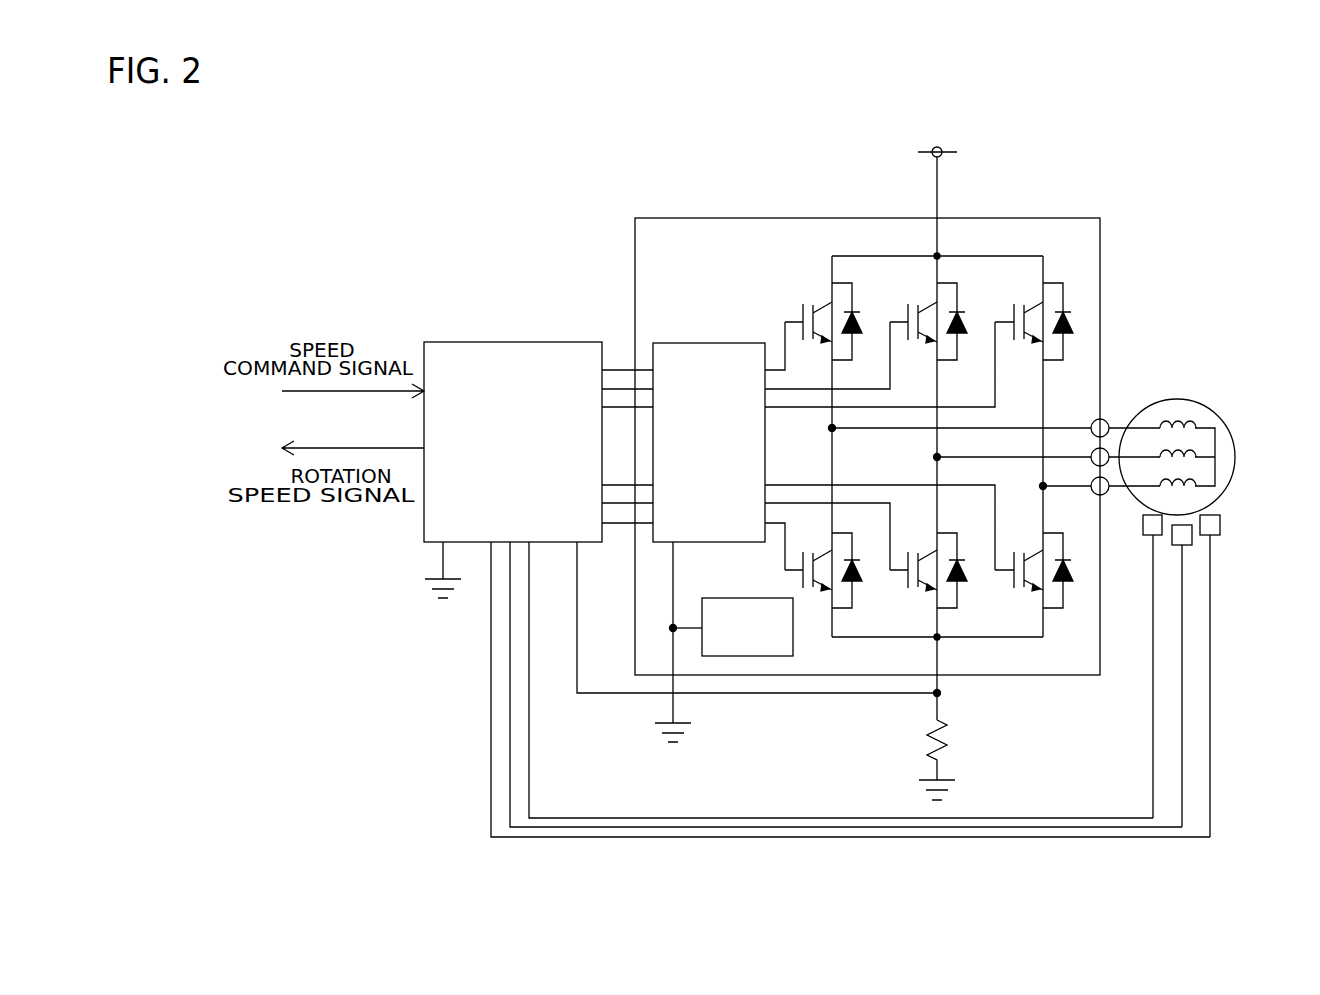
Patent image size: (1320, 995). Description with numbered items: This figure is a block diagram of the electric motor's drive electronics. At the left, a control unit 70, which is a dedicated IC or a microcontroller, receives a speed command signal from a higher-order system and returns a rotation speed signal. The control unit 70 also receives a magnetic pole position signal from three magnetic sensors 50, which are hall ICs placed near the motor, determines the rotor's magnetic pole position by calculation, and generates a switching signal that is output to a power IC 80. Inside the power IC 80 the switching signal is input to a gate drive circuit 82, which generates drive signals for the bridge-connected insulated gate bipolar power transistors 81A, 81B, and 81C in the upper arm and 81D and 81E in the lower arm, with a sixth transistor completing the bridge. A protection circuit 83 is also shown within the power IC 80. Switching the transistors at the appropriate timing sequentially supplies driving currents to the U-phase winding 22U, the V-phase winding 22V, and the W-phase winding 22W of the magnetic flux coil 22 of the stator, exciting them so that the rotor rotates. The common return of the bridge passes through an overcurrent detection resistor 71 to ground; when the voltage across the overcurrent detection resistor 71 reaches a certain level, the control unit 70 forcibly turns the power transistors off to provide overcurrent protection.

The control unit 70 is at (493, 342).
The power IC 80 is at (705, 218).
The gate drive circuit 82 is at (683, 343).
The power transistor 81A is at (822, 303).
The power transistor 81B is at (915, 303).
The power transistor 81C is at (1020, 303).
The power transistor 81D is at (857, 605).
The power transistor 81E is at (960, 605).
The protection circuit 83 is at (788, 643).
The overcurrent detection resistor 71 is at (967, 738).
The magnetic flux coil 22 is at (1203, 426).
The U-phase winding 22U is at (1157, 418).
The V-phase winding 22V is at (1197, 445).
The W-phase winding 22W is at (1198, 478).
The magnetic sensors 50 is at (1153, 538).